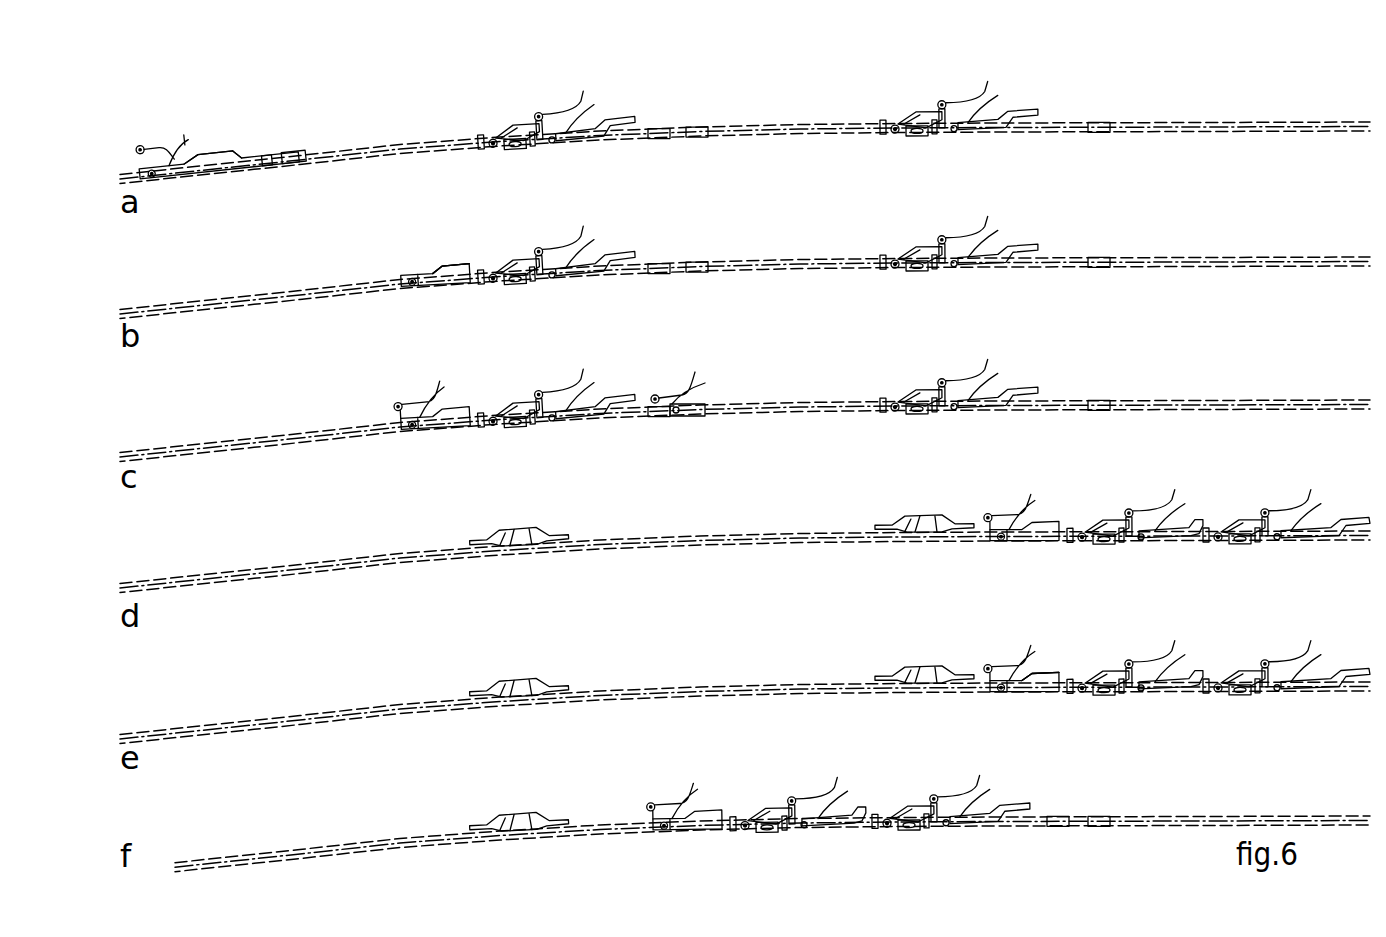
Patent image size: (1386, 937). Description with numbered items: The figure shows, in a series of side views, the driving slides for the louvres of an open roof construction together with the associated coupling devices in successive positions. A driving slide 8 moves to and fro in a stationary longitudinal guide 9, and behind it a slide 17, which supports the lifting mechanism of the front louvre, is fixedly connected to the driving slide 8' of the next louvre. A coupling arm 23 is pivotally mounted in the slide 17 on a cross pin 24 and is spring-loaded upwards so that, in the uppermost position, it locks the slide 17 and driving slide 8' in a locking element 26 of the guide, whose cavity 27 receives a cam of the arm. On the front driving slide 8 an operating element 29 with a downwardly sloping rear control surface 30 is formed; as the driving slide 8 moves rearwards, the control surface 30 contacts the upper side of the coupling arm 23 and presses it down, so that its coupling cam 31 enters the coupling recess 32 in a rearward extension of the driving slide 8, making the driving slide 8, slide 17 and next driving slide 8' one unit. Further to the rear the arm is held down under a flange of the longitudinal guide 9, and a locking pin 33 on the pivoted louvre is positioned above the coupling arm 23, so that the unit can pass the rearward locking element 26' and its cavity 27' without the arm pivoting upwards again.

The driving slide 8 is at (598, 437).
The driving slide of the next louvre 8' is at (962, 435).
The longitudinal guide 9 is at (765, 130).
The slide 17 is at (482, 137).
The coupling arm 23 is at (515, 128).
The cross pin 24 is at (495, 140).
The locking element 26 is at (519, 660).
The locking element 26' is at (924, 570).
The cavity 27 is at (526, 659).
The cavity 27' is at (933, 570).
The operating element 29 is at (217, 155).
The control surface 30 is at (243, 157).
The coupling cam 31 is at (542, 427).
The coupling recess 32 is at (275, 155).
The locking pin 33 is at (547, 115).